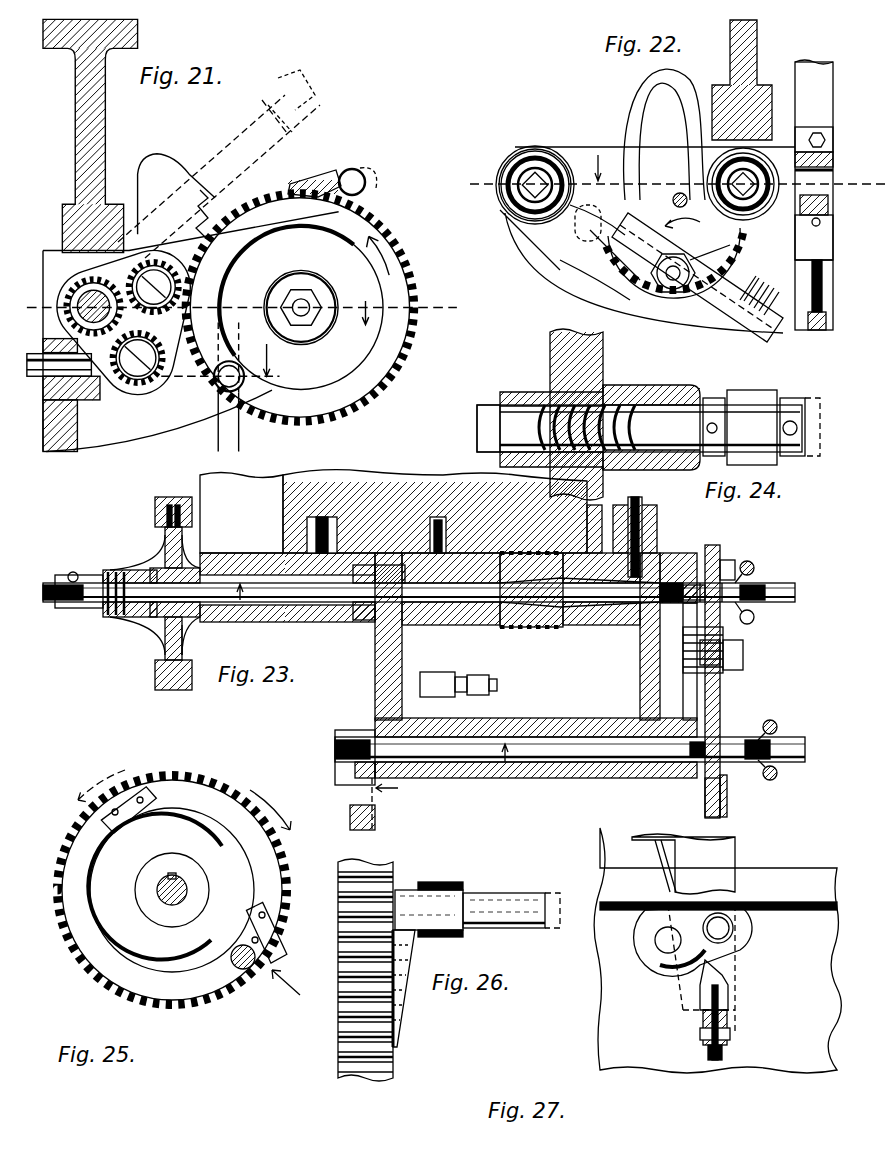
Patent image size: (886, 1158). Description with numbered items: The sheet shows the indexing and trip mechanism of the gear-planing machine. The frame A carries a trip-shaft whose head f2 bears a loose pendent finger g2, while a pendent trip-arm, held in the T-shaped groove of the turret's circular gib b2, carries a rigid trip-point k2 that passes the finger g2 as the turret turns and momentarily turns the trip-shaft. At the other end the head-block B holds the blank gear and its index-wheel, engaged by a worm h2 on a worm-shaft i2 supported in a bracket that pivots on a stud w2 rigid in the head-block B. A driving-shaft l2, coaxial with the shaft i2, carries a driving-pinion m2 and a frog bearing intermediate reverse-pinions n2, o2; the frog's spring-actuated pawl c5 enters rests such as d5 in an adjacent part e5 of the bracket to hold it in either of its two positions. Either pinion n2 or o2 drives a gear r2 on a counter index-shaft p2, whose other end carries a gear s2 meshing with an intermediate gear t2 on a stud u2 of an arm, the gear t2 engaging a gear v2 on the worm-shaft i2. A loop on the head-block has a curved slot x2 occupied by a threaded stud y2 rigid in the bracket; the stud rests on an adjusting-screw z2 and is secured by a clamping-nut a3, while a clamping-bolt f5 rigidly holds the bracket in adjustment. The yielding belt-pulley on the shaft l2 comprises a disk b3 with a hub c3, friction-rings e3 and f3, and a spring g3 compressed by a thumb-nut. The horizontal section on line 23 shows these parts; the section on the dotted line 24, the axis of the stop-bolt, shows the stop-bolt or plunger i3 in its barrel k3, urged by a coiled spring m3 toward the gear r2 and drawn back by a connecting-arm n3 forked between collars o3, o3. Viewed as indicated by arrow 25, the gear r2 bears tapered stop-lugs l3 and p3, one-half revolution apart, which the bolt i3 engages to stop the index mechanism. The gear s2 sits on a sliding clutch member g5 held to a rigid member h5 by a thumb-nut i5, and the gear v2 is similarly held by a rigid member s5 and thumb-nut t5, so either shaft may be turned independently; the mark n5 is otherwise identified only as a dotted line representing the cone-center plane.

In FIG. 22, the head-block B is at (814, 195).
In FIG. 23, the head-block B is at (380, 525).
In FIG. 21, the adjacent part of the bracket e5 is at (140, 155).
In FIG. 21, the rest d5 is at (219, 164).
In FIG. 21, the spring-actuated pawl c5 is at (355, 168).
In FIG. 21, the intermediate reverse-pinion n2 is at (149, 255).
In FIG. 21, the driving-pinion m2 is at (72, 280).
In FIG. 23, the driving-pinion m2 is at (362, 565).
In FIG. 21, the intermediate reverse-pinion o2 is at (122, 365).
In FIG. 21, the pivot-stud w2 is at (80, 372).
In FIG. 23, the pivot-stud w2 is at (320, 515).
In FIG. 21, the driving-shaft l2 is at (59, 346).
In FIG. 23, the driving-shaft l2 is at (220, 602).
In FIG. 21, the circular gib b2 is at (282, 280).
In FIG. 21, the stop-gear r2 is at (300, 308).
In FIG. 23, the stop-gear r2 is at (355, 812).
In FIG. 25, the stop-gear r2 is at (118, 877).
In FIG. 26, the stop-gear r2 is at (348, 1028).
In FIG. 21, the stop-bolt i3 is at (225, 335).
In FIG. 24, the stop-bolt i3 is at (639, 428).
In FIG. 23, the stop-bolt i3 is at (478, 675).
In FIG. 25, the stop-bolt i3 is at (246, 970).
In FIG. 26, the stop-bolt i3 is at (512, 887).
In FIG. 21, the barrel k3 is at (225, 364).
In FIG. 24, the barrel k3 is at (688, 383).
In FIG. 23, the barrel k3 is at (435, 672).
In FIG. 21, the connecting-arm n3 is at (210, 400).
In FIG. 24, the connecting-arm n3 is at (760, 390).
In FIG. 21, the broken dotted section line 23 is at (244, 300).
In FIG. 22, the broken dotted section line 23 is at (678, 176).
In FIG. 21, the dotted section line 24 is at (220, 386).
In FIG. 23, the view arrow 25 is at (387, 804).
In FIG. 22, the counter index-shaft p2 is at (535, 158).
In FIG. 23, the counter index-shaft p2 is at (527, 762).
In FIG. 25, the counter index-shaft p2 is at (165, 900).
In FIG. 22, the thumb-nut i5 is at (515, 207).
In FIG. 23, the thumb-nut i5 is at (775, 778).
In FIG. 22, the worm-shaft i2 is at (760, 170).
In FIG. 22, the thumb-nut t5 is at (712, 150).
In FIG. 23, the thumb-nut t5 is at (754, 565).
In FIG. 22, the intermediate gear t2 is at (700, 268).
In FIG. 23, the intermediate gear t2 is at (735, 665).
In FIG. 22, the gear s2 is at (589, 252).
In FIG. 23, the gear s2 is at (705, 805).
In FIG. 22, the gear v2 is at (745, 228).
In FIG. 23, the gear v2 is at (715, 560).
In FIG. 22, the curved slot x2 is at (805, 218).
In FIG. 22, the threaded stud y2 is at (814, 237).
In FIG. 23, the threaded stud y2 is at (620, 602).
In FIG. 22, the adjusting-screw z2 is at (814, 332).
In FIG. 22, the stud u2 is at (660, 285).
In FIG. 23, the stud u2 is at (745, 652).
In FIG. 24, the coiled spring m3 is at (612, 405).
In FIG. 24, the collars o3 is at (712, 398).
In FIG. 23, the clamping-nut a3 is at (150, 553).
In FIG. 23, the spring g3 is at (112, 572).
In FIG. 23, the hub c3 is at (100, 612).
In FIG. 23, the clutch member h5 is at (73, 572).
In FIG. 23, the friction-ring e3 is at (165, 515).
In FIG. 23, the friction-ring f3 is at (182, 512).
In FIG. 23, the circular disk b3 is at (188, 645).
In FIG. 23, the clamping-bolt f5 is at (438, 517).
In FIG. 23, the worm h2 is at (530, 630).
In FIG. 23, the clutch member s5 is at (672, 583).
In FIG. 23, the dotted line n5 is at (694, 583).
In FIG. 23, the clutch member g5 is at (727, 790).
In FIG. 25, the stop-lug p3 is at (138, 808).
In FIG. 25, the stop-lug l3 is at (262, 920).
In FIG. 26, the stop-lug l3 is at (405, 985).
In FIG. 27, the frame A is at (717, 950).
In FIG. 27, the pendent finger g2 is at (722, 960).
In FIG. 27, the head f2 is at (735, 922).
In FIG. 27, the trip-point k2 is at (730, 1000).